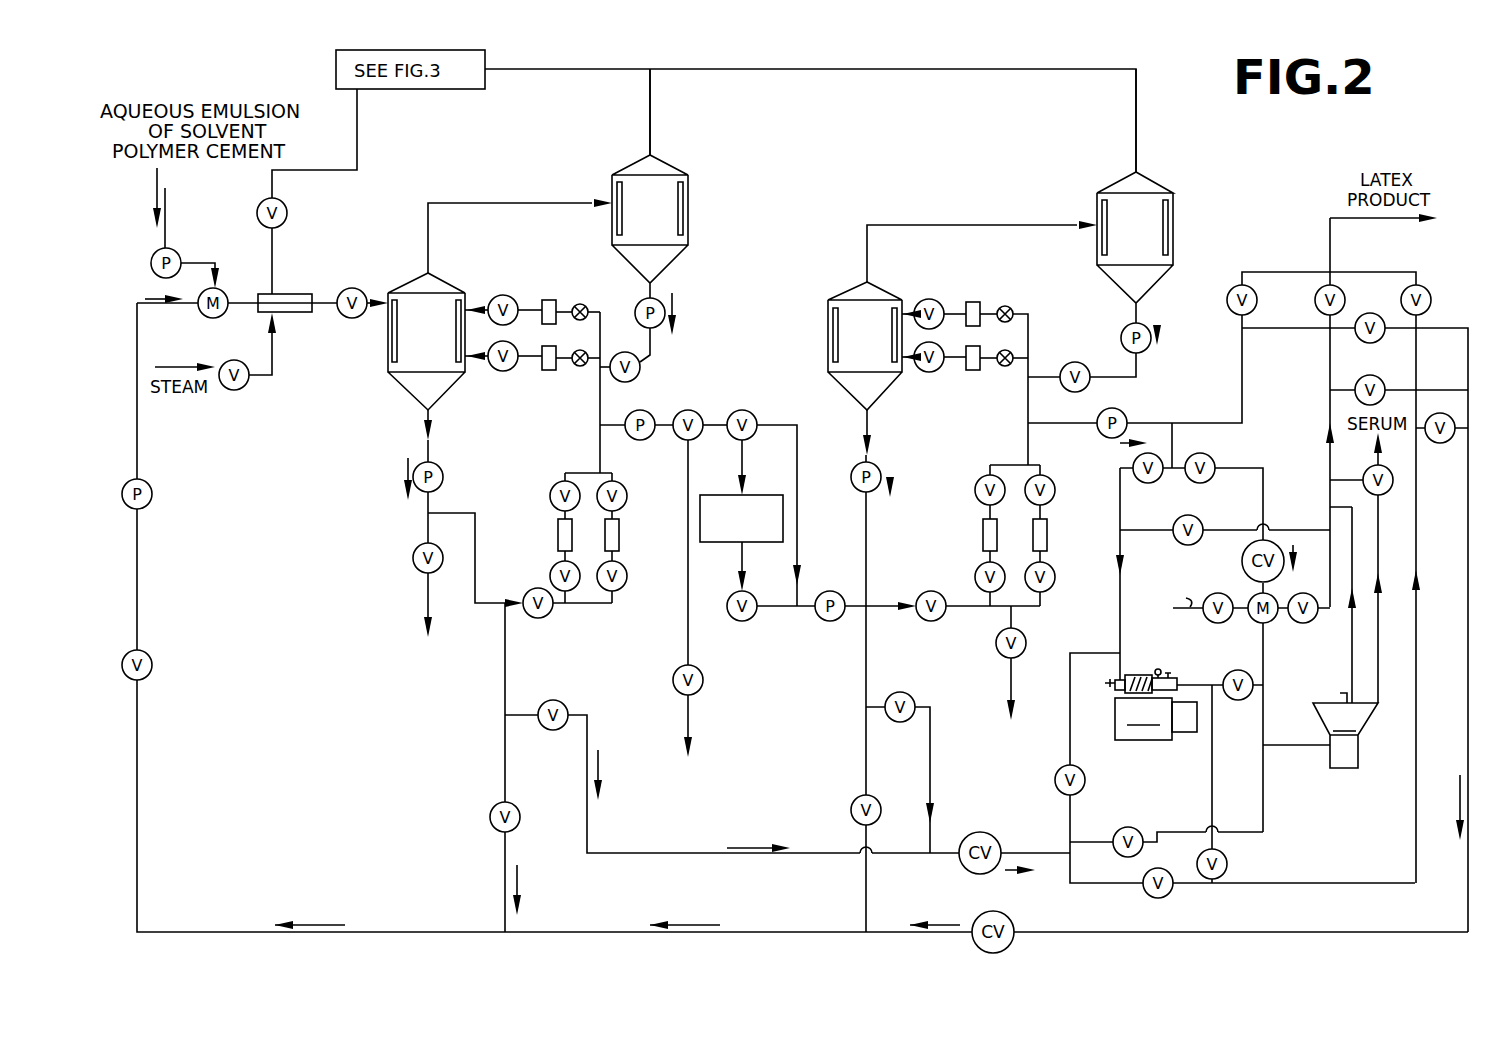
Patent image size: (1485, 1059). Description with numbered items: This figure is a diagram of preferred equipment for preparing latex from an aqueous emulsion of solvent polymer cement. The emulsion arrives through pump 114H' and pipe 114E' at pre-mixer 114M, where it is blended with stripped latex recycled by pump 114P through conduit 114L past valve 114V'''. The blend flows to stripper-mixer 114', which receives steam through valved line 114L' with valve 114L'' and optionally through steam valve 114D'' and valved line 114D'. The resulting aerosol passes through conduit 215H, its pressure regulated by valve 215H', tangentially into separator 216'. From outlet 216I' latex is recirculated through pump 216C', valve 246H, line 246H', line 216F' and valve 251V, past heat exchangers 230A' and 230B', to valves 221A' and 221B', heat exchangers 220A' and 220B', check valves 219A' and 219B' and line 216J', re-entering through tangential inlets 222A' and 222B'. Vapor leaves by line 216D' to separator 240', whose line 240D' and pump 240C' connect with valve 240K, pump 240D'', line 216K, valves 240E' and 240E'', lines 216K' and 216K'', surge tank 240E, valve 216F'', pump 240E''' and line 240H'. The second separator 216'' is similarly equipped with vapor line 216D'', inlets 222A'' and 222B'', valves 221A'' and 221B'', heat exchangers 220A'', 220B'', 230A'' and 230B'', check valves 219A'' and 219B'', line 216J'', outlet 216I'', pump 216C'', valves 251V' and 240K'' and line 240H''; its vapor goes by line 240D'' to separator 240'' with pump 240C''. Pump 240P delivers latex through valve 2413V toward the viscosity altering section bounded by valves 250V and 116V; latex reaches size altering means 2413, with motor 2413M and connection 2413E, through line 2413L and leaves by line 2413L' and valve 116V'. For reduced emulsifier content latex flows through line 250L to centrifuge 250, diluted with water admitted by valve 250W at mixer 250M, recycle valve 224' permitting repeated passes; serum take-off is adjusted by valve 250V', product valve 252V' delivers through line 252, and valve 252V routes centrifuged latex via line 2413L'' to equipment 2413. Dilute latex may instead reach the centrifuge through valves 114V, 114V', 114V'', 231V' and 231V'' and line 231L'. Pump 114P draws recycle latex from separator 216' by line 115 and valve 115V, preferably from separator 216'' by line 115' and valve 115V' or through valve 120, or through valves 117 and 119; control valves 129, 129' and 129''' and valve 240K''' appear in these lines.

The valved line 114L' is at (873, 510).
The valve 114L'' is at (303, 244).
The pump 114H' is at (192, 240).
The pipe 114E' is at (211, 259).
The pre-mixer 114M is at (232, 332).
The conduit 114L is at (802, 613).
The pump 114P is at (151, 490).
The valve 114V''' is at (172, 655).
The steam valve 114D'' is at (204, 366).
The valved line 114D' is at (276, 361).
The stripper-mixer 114' is at (282, 285).
The flow restricting valve 215H' is at (356, 288).
The conduit section 215H is at (335, 322).
The separator 216' is at (393, 341).
The vapor line 216D' is at (520, 223).
The second tangential inlet means 222A' is at (476, 285).
The flow restricting valve 221A' is at (498, 276).
The heat exchanger 220A' is at (573, 285).
The check valve 219A' is at (594, 296).
The line 216J' is at (622, 379).
The second tangential inlet means 222B' is at (478, 381).
The valve 221B' is at (498, 388).
The heat exchanger 220B' is at (551, 389).
The check valve 219B' is at (572, 377).
The first condenser 240' is at (670, 215).
The line 240D' is at (687, 112).
The condensate pump 240C' is at (683, 313).
The valve 240K is at (651, 554).
The line 240D'' is at (906, 254).
The line 216K is at (650, 552).
The valve 240E' is at (710, 389).
The line 216K' is at (758, 475).
The valve 240E'' is at (765, 410).
The line 216K'' is at (827, 549).
The surge tank 240E is at (740, 515).
The valve 216F'' is at (752, 619).
The pump 240E''' is at (862, 591).
The line 240H' is at (650, 627).
The recirculating circuit outlet 216I' is at (397, 419).
The pump 216C' is at (399, 462).
The valve 246H is at (396, 532).
The line 246H' is at (391, 605).
The line 216F' is at (475, 722).
The valve 251V is at (550, 588).
The heat exchanger 230A' is at (551, 538).
The heat exchanger 230B' is at (637, 538).
The valve 114V is at (581, 738).
The valve 115V is at (474, 810).
The line 115 is at (480, 879).
The valve 115V' is at (831, 712).
The line 115' is at (835, 884).
The control valve 129 is at (987, 857).
The control valve 129' is at (959, 921).
The valve 114V' is at (919, 766).
The separator 216'' is at (851, 334).
The vapor line 216D'' is at (982, 239).
The inlet 222A'' is at (908, 287).
The valve 221A'' is at (937, 279).
The orifice 220A'' is at (993, 286).
The check valve 219A'' is at (1025, 368).
The inlet 222B'' is at (913, 380).
The flow restricting valve 221B'' is at (930, 388).
The orifice 220B'' is at (983, 372).
The check valve 219B'' is at (996, 386).
The line 216J'' is at (1060, 332).
The outlet 216I'' is at (838, 427).
The pump 216C'' is at (849, 470).
The valve 251V' is at (978, 582).
The valve 240K'' is at (1029, 528).
The line 240H'' is at (969, 668).
The heat exchanger 230A'' is at (972, 535).
The heat exchanger 230B'' is at (1070, 535).
The separator 240'' is at (1153, 232).
The condensate pump 240C'' is at (1112, 318).
The pump 240P is at (1105, 410).
The valve 2413V is at (1135, 465).
The valve 250V is at (1214, 452).
The line 250L is at (1232, 466).
The valve 252V is at (1225, 519).
The line 2413L'' is at (1152, 574).
The control valve 129''' is at (1243, 566).
The valve 250W is at (1235, 630).
The mixer 250M is at (1270, 622).
The recycle valve 224' is at (1307, 619).
The line 2413L' is at (1298, 599).
The electrical connection 2413E is at (1105, 683).
The size altering means 2413 is at (1156, 704).
The motor 2413M is at (1187, 720).
The line 2413L is at (1227, 747).
The valve 231V' is at (1042, 770).
The line 231L' is at (1056, 815).
The valve 231V'' is at (1171, 851).
The valve 116V is at (1239, 784).
The valve 114V'' is at (1192, 891).
The centrifuge 250 is at (1347, 631).
The valve 240K''' is at (1305, 286).
The latex product valve 252V' is at (1306, 412).
The valve 120 is at (1368, 313).
The valve 116V' is at (1424, 278).
The line 252 is at (1330, 358).
The valve 119 is at (1368, 375).
The valve 117 is at (1445, 443).
The valve 250V' is at (1330, 480).